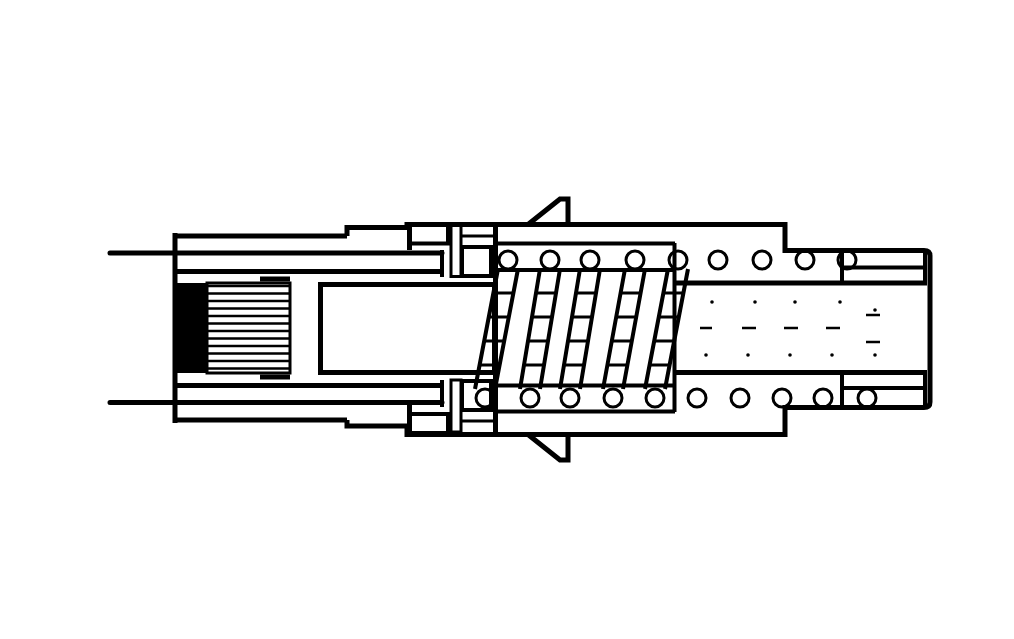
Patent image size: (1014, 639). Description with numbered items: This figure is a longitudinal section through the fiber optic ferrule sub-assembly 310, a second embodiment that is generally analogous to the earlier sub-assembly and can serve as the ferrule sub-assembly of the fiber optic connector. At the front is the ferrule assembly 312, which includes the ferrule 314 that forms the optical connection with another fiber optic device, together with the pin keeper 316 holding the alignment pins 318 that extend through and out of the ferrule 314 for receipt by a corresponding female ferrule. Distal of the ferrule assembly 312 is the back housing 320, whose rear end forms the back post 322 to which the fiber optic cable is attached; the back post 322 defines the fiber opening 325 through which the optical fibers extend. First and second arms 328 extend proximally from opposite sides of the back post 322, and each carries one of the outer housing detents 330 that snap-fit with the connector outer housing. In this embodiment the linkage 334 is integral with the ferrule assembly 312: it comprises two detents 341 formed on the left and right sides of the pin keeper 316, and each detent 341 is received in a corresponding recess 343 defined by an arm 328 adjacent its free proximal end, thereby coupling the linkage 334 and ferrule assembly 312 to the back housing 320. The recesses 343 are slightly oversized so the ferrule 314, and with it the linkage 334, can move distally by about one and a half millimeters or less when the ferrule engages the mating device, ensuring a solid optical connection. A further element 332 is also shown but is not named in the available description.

The fiber optic ferrule sub-assembly 310 is at (642, 71).
The ferrule assembly 312 is at (340, 156).
The ferrule 314 is at (228, 246).
The pin keeper 316 is at (424, 225).
The alignment pins 318 is at (130, 393).
The back housing 320 is at (750, 156).
The back post 322 is at (890, 251).
The fiber opening 325 is at (851, 350).
The arms 328 is at (609, 229).
The outer housing detents 330 is at (558, 206).
The spring 332 is at (640, 241).
The linkage 334 is at (442, 422).
The detents 341 is at (461, 232).
The recesses 343 is at (486, 240).